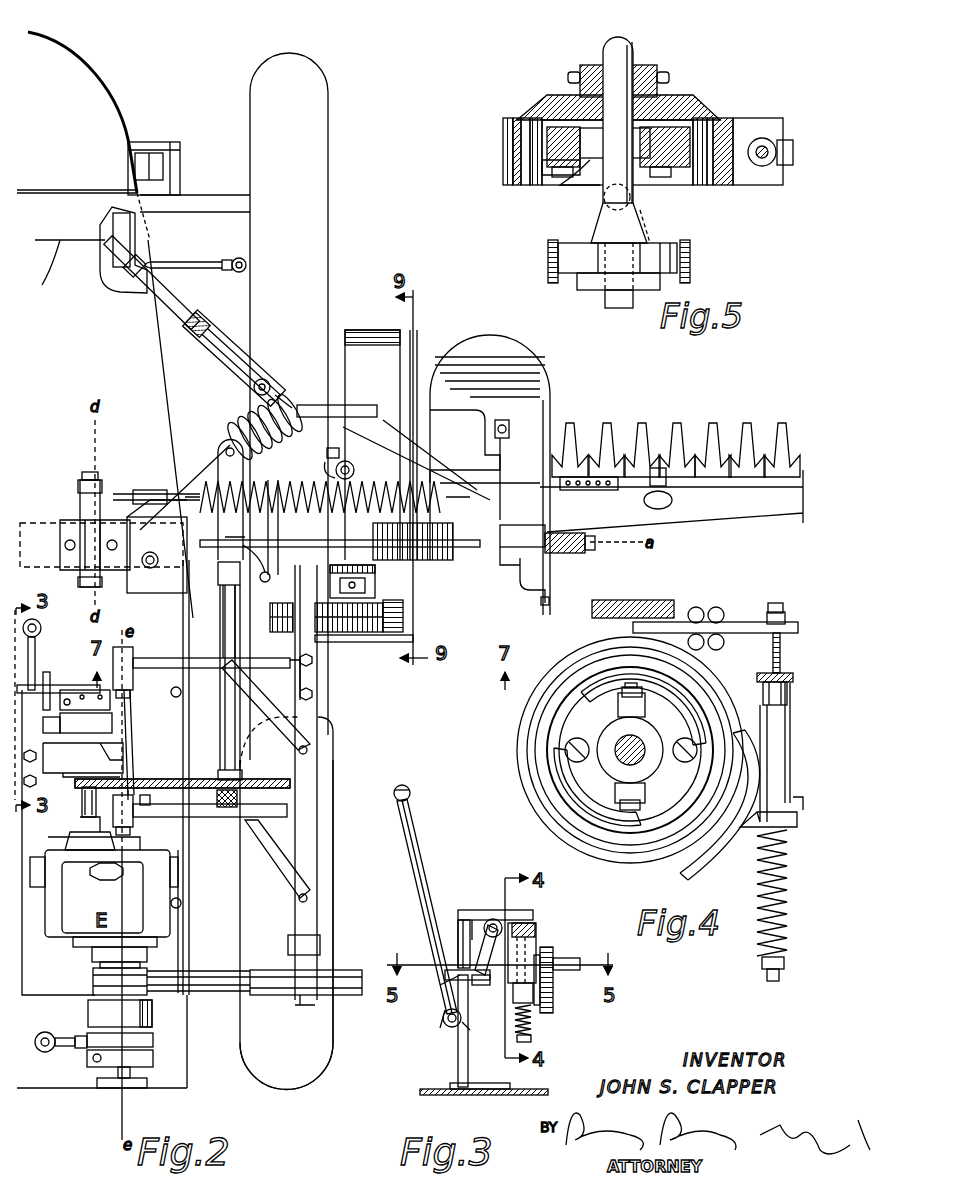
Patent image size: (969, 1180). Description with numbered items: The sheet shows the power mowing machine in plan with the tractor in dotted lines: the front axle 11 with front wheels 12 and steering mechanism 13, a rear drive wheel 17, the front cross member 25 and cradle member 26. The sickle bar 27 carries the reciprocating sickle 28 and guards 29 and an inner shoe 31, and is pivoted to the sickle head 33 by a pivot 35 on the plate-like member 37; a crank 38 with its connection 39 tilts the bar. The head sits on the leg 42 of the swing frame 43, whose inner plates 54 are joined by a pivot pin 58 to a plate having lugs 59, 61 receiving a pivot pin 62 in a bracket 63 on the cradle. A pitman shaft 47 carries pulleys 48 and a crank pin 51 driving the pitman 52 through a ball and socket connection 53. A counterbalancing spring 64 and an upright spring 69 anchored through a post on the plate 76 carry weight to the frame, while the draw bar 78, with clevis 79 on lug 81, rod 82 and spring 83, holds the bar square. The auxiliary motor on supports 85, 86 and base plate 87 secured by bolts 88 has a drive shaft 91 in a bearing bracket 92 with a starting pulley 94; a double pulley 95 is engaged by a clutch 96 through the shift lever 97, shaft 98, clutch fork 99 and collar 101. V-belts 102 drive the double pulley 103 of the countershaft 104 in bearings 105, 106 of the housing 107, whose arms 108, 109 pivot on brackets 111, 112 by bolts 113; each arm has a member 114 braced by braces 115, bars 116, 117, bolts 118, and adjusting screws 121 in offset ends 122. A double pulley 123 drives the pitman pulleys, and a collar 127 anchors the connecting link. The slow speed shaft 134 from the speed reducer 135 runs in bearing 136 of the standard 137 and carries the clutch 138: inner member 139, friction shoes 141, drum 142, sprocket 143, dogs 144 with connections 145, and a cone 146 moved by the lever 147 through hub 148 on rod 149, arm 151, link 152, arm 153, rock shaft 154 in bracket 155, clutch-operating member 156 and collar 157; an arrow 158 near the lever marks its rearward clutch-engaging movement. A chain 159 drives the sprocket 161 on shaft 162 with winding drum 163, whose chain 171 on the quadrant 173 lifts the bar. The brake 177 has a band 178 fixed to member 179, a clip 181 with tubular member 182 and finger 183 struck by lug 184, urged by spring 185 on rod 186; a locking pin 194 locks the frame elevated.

In FIG. 2, the front axle 11 is at (210, 193).
In FIG. 2, the front wheels 12 is at (330, 162).
In FIG. 2, the steering mechanism 13 is at (182, 265).
In FIG. 2, the rear drive wheel 17 is at (334, 884).
In FIG. 2, the front cross member 25 is at (50, 270).
In FIG. 2, the cradle member 26 is at (101, 545).
In FIG. 2, the sickle bar 27 is at (773, 516).
In FIG. 2, the sickle 28 is at (770, 426).
In FIG. 2, the guards 29 is at (712, 427).
In FIG. 2, the inner ground engaging shoe 31 is at (535, 362).
In FIG. 2, the sickle head 33 is at (396, 352).
In FIG. 2, the pivot 35 is at (577, 552).
In FIG. 2, the plate-like member 37 is at (545, 560).
In FIG. 2, the crank 38 is at (540, 594).
In FIG. 2, the crank connection 39 is at (500, 425).
In FIG. 2, the swing frame leg 42 is at (330, 405).
In FIG. 2, the swing frame 43 is at (198, 460).
In FIG. 2, the pitman shaft 47 is at (365, 645).
In FIG. 2, the pulleys 48 is at (400, 630).
In FIG. 2, the crank pin 51 is at (335, 455).
In FIG. 2, the pitman 52 is at (370, 445).
In FIG. 2, the ball and socket connection 53 is at (470, 452).
In FIG. 2, the plate 54 is at (172, 593).
In FIG. 2, the pivot pin 58 is at (150, 570).
In FIG. 2, the lug 59 is at (78, 583).
In FIG. 2, the lug 61 is at (78, 480).
In FIG. 2, the pivot pin 62 is at (86, 472).
In FIG. 2, the bracket 63 is at (80, 538).
In FIG. 2, the spring 64 is at (405, 470).
In FIG. 2, the spring 69 is at (258, 418).
In FIG. 2, the longitudinally extending plate 76 is at (182, 432).
In FIG. 2, the draw bar 78 is at (250, 320).
In FIG. 2, the clevis 79 is at (258, 340).
In FIG. 2, the lug 81 is at (280, 380).
In FIG. 2, the rod 82 is at (190, 302).
In FIG. 2, the spring 83 is at (215, 345).
In FIG. 2, the upright supporting member 85 is at (101, 849).
In FIG. 2, the upright supporting member 86 is at (178, 884).
In FIG. 3, the base plate 87 is at (422, 1090).
In FIG. 2, the bolts 88 is at (176, 697).
In FIG. 2, the drive shaft extension 91 is at (153, 1060).
In FIG. 2, the bearing bracket 92 is at (145, 1078).
In FIG. 2, the starting pulley 94 is at (112, 1088).
In FIG. 2, the double pulley 95 is at (93, 984).
In FIG. 2, the clutch 96 is at (155, 1010).
In FIG. 2, the shift lever 97 is at (40, 1050).
In FIG. 2, the shaft 98 is at (78, 1048).
In FIG. 2, the clutch fork 99 is at (153, 1040).
In FIG. 2, the clutch collar 101 is at (97, 1062).
In FIG. 2, the V-belts 102 is at (228, 988).
In FIG. 2, the double pulley 103 is at (345, 996).
In FIG. 2, the countershaft 104 is at (305, 1008).
In FIG. 2, the bearing 105 is at (320, 945).
In FIG. 2, the bearing 106 is at (320, 655).
In FIG. 2, the tubular bearing housing 107 is at (312, 770).
In FIG. 2, the arm 108 is at (208, 828).
In FIG. 2, the arm 109 is at (208, 656).
In FIG. 2, the bracket 111 is at (140, 800).
In FIG. 2, the bracket 112 is at (176, 652).
In FIG. 2, the pivot bolts 113 is at (128, 712).
In FIG. 2, the arm member 114 is at (270, 690).
In FIG. 2, the braces 115 is at (325, 738).
In FIG. 2, the bar 116 is at (140, 690).
In FIG. 2, the bar 117 is at (211, 716).
In FIG. 2, the bolts 118 is at (212, 787).
In FIG. 2, the adjusting screws 121 is at (270, 640).
In FIG. 2, the offset end portion 122 is at (302, 675).
In FIG. 2, the double pulley 123 is at (280, 601).
In FIG. 2, the collar 127 is at (368, 592).
In FIG. 2, the slow speed shaft 134 is at (82, 805).
In FIG. 3, the slow speed shaft 134 is at (578, 958).
In FIG. 4, the slow speed shaft 134 is at (622, 742).
In FIG. 5, the slow speed shaft 134 is at (640, 46).
In FIG. 2, the speed reducer 135 is at (62, 838).
In FIG. 2, the bearing 136 is at (82, 685).
In FIG. 3, the bearing 136 is at (455, 948).
In FIG. 3, the standard 137 is at (458, 1065).
In FIG. 5, the clutch 138 is at (513, 106).
In FIG. 4, the inner clutch member 139 is at (652, 766).
In FIG. 5, the inner clutch member 139 is at (660, 122).
In FIG. 4, the friction shoes 141 is at (598, 695).
In FIG. 5, the friction shoes 141 is at (530, 182).
In FIG. 4, the clutch drum 142 is at (690, 682).
In FIG. 5, the clutch drum 142 is at (508, 182).
In FIG. 2, the sprocket 143 is at (75, 781).
In FIG. 3, the sprocket 143 is at (548, 955).
In FIG. 5, the sprocket 143 is at (580, 66).
In FIG. 4, the dogs 144 is at (690, 712).
In FIG. 5, the dogs 144 is at (560, 198).
In FIG. 4, the operative connections 145 is at (697, 740).
In FIG. 5, the cone 146 is at (642, 226).
In FIG. 2, the lever 147 is at (40, 628).
In FIG. 3, the lever 147 is at (418, 856).
In FIG. 2, the hub 148 is at (48, 712).
In FIG. 3, the hub 148 is at (448, 1028).
In FIG. 2, the horizontal rod 149 is at (48, 672).
In FIG. 3, the horizontal rod 149 is at (443, 1018).
In FIG. 3, the upright arm 151 is at (440, 987).
In FIG. 3, the link 152 is at (470, 980).
In FIG. 3, the arm 153 is at (478, 986).
In FIG. 3, the rock shaft 154 is at (494, 910).
In FIG. 3, the bracket 155 is at (510, 918).
In FIG. 4, the bracket 155 is at (654, 593).
In FIG. 5, the clutch-operating member 156 is at (548, 276).
In FIG. 5, the clutch collar 157 is at (576, 278).
In FIG. 3, the knob 158 is at (385, 835).
In FIG. 2, the chain 159 is at (152, 795).
In FIG. 3, the chain 159 is at (553, 990).
In FIG. 2, the sprocket 161 is at (272, 787).
In FIG. 2, the shaft 162 is at (262, 716).
In FIG. 2, the winding drum 163 is at (225, 534).
In FIG. 2, the chain 171 is at (440, 570).
In FIG. 2, the quadrant 173 is at (428, 562).
In FIG. 4, the brake 177 is at (708, 608).
In FIG. 4, the brake band 178 is at (518, 727).
In FIG. 5, the brake band 178 is at (503, 158).
In FIG. 4, the fixed member 179 is at (748, 622).
In FIG. 4, the clip 181 is at (735, 855).
In FIG. 3, the tubular member 182 is at (508, 997).
In FIG. 4, the tubular member 182 is at (762, 721).
In FIG. 5, the tubular member 182 is at (765, 166).
In FIG. 3, the finger 183 is at (524, 945).
In FIG. 4, the finger 183 is at (764, 672).
In FIG. 3, the lug 184 is at (505, 924).
In FIG. 4, the lug 184 is at (757, 681).
In FIG. 3, the spring 185 is at (533, 1022).
In FIG. 4, the spring 185 is at (757, 933).
In FIG. 3, the rod 186 is at (531, 1040).
In FIG. 4, the rod 186 is at (780, 662).
In FIG. 2, the locking pin 194 is at (272, 480).